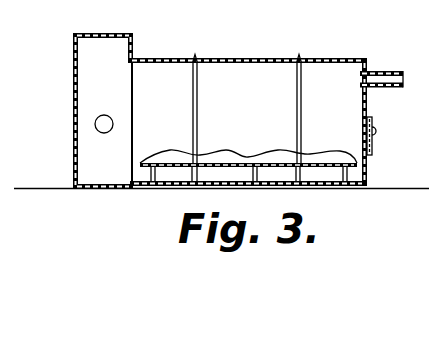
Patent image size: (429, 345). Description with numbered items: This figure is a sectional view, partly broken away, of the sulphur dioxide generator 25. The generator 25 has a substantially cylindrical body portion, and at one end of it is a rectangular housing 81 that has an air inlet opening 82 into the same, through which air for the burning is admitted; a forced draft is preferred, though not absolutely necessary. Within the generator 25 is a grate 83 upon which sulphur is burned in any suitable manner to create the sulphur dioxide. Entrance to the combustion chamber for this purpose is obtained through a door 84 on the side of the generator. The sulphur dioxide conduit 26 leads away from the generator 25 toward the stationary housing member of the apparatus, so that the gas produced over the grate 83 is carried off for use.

The generator 25 is at (241, 59).
The sulphur dioxide conduit 26 is at (379, 71).
The rectangular housing 81 is at (90, 79).
The air inlet opening 82 is at (104, 124).
The grate 83 is at (233, 163).
The door 84 is at (376, 131).